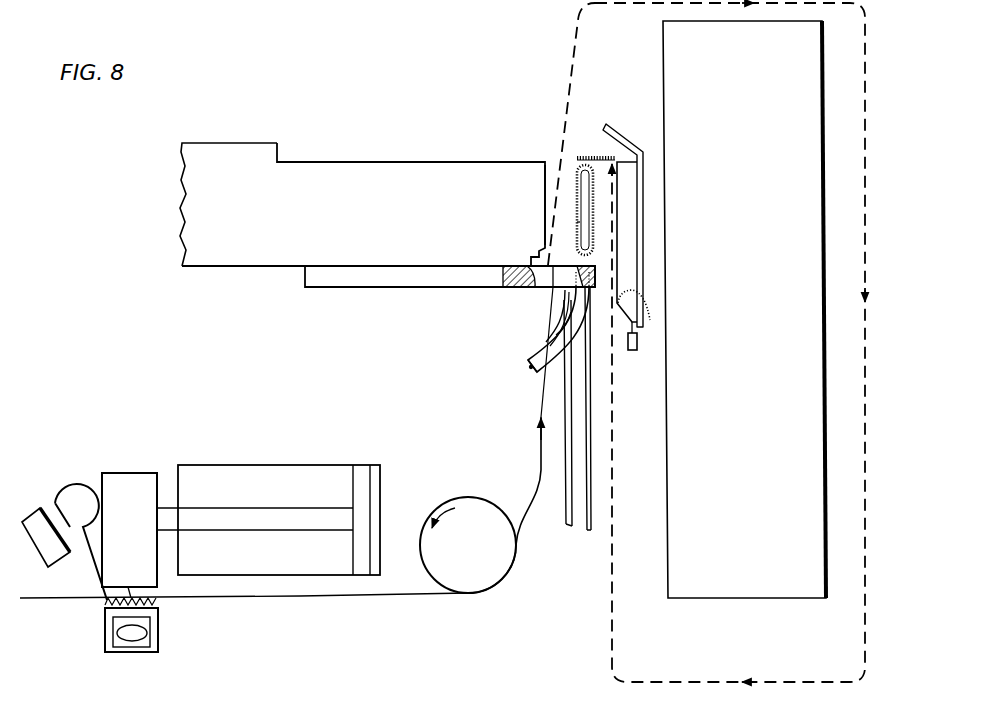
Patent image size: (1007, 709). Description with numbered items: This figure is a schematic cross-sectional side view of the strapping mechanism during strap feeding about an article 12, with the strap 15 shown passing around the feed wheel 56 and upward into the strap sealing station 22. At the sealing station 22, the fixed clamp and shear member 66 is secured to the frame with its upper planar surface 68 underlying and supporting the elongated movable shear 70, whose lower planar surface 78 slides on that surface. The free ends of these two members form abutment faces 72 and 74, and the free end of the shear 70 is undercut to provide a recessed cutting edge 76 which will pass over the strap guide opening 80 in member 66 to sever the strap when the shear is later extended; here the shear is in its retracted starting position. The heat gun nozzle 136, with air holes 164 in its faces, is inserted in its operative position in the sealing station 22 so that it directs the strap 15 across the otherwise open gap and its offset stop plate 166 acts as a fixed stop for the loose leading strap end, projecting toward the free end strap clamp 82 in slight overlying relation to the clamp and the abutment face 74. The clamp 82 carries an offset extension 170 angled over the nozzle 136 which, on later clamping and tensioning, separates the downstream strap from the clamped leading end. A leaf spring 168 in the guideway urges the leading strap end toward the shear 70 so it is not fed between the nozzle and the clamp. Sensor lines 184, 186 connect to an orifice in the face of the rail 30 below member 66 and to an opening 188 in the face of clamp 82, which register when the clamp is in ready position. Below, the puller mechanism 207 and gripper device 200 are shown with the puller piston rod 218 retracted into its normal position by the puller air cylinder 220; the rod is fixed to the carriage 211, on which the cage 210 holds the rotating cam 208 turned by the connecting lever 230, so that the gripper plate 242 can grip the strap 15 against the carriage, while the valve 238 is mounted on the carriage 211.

The article 12 is at (663, 35).
The strap 15 is at (540, 472).
The strap sealing station 22 is at (552, 147).
The rail 30 is at (580, 524).
The feed wheel 56 is at (466, 497).
The clamp and shear member 66 is at (330, 273).
The upper planar surface 68 is at (388, 262).
The movable shear 70 is at (334, 159).
The abutment face 72 is at (600, 270).
The abutment face 74 is at (546, 168).
The cutting edge 76 is at (536, 276).
The lower planar surface 78 is at (248, 268).
The strap guide opening 80 is at (566, 297).
The free end strap clamp 82 is at (648, 183).
The nozzle 136 is at (578, 166).
The holes 164 is at (577, 222).
The stop plate 166 is at (604, 156).
The leaf spring 168 is at (556, 336).
The offset extension 170 is at (621, 137).
The line 184 is at (530, 366).
The line 186 is at (637, 352).
The opening 188 is at (640, 292).
The gripper device 200 is at (134, 646).
The puller mechanism 207 is at (241, 499).
The rotating cam 208 is at (132, 636).
The cage 210 is at (160, 645).
The carriage 211 is at (135, 473).
The puller piston rod 218 is at (260, 508).
The puller air cylinder 220 is at (316, 466).
The connecting lever 230 is at (92, 571).
The valve 238 is at (37, 512).
The gripper plate 242 is at (157, 603).